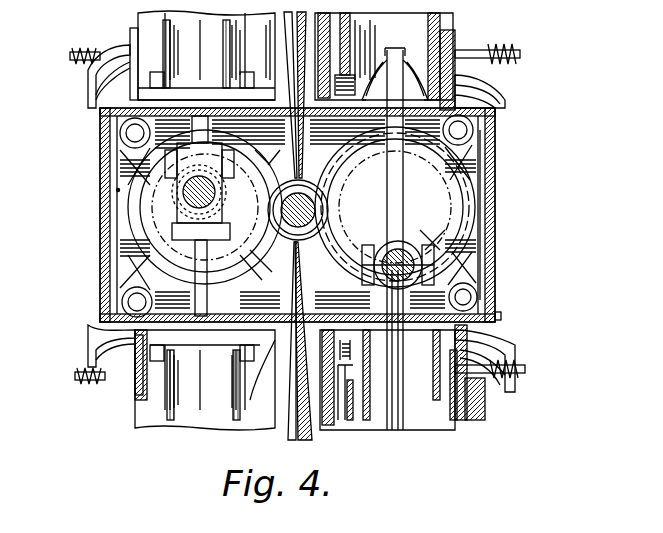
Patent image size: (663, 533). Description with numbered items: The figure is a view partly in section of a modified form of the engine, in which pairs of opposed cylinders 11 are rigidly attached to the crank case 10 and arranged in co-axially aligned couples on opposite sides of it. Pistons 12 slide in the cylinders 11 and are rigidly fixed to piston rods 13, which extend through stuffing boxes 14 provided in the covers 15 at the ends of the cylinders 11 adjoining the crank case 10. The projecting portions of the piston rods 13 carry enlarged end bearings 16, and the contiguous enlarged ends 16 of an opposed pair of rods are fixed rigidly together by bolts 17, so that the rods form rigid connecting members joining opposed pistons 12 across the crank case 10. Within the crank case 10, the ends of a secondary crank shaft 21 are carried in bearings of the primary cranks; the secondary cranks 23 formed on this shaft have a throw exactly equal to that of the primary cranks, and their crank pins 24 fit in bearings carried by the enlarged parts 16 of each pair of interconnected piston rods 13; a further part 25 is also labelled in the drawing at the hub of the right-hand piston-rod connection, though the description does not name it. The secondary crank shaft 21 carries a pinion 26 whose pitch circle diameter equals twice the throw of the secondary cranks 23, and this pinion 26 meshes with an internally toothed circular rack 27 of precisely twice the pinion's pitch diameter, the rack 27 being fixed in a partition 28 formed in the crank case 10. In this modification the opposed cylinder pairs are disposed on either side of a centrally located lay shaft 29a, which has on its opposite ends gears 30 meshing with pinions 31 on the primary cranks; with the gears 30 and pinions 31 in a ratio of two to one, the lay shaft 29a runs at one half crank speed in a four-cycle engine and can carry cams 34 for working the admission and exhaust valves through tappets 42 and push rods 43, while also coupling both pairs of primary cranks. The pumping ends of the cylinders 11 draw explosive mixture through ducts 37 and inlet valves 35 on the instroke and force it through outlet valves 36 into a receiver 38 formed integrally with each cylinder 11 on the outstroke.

The crank case 10 is at (105, 207).
The cylinders 11 is at (455, 33).
The pistons 12 is at (505, 84).
The piston rods 13 is at (155, 262).
The stuffing boxes 14 is at (500, 315).
The covers 15 is at (420, 345).
The enlarged end bearings 16 is at (118, 190).
The bolts 17 is at (440, 283).
The secondary crank shaft 21 is at (150, 236).
The secondary cranks 23 is at (150, 217).
The crank pins 24 is at (497, 280).
The right bearing hub 25 is at (380, 285).
The pinion 26 is at (100, 152).
The internally toothed circular rack 27 is at (497, 195).
The partition 28 is at (193, 285).
The lay shaft 29a is at (270, 280).
The gears 30 is at (333, 282).
The pinions 31 is at (365, 158).
The cams 34 is at (270, 165).
The inlet valves 35 is at (500, 68).
The outlet valves 36 is at (472, 387).
The ducts 37 is at (88, 98).
The receiver 38 is at (316, 365).
The tappets 42 is at (247, 418).
The push rods 43 is at (295, 420).